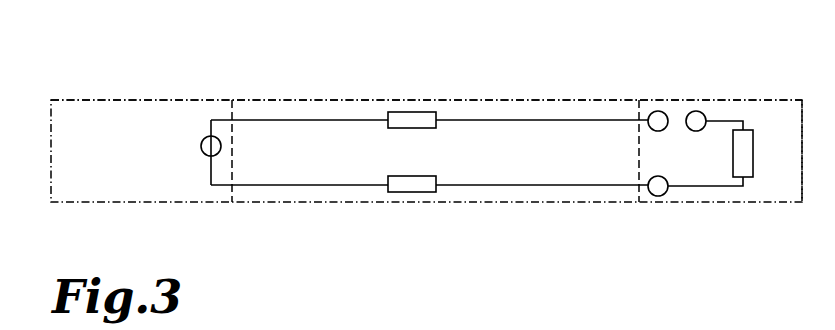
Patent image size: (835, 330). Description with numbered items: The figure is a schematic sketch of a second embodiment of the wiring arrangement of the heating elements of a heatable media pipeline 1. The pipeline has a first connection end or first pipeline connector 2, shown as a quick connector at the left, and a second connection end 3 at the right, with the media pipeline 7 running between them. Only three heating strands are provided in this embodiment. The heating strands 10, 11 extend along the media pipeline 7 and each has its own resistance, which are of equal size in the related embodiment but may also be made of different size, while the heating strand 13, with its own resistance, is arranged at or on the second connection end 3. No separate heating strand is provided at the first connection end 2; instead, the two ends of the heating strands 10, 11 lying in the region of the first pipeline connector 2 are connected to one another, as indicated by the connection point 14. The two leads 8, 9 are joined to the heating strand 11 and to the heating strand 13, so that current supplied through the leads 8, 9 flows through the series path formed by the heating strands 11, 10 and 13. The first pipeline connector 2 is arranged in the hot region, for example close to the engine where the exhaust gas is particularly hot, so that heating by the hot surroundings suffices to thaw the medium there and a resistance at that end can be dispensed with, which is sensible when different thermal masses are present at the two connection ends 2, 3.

The heatable media pipeline 1 is at (67, 84).
The first connection end 2 is at (107, 98).
The second connection end 3 is at (742, 101).
The media pipeline 7 is at (470, 100).
The lead 8 is at (658, 111).
The lead 9 is at (696, 111).
The heating strand 10 is at (296, 185).
The heating strand 11 is at (296, 117).
The heating strand 13 is at (692, 190).
The connection point 14 is at (211, 146).